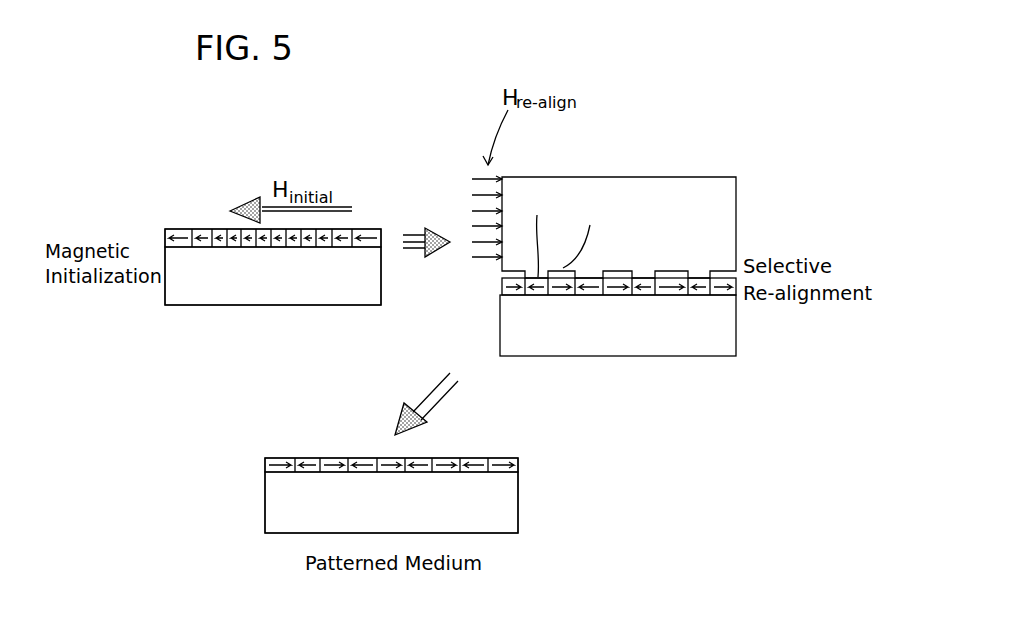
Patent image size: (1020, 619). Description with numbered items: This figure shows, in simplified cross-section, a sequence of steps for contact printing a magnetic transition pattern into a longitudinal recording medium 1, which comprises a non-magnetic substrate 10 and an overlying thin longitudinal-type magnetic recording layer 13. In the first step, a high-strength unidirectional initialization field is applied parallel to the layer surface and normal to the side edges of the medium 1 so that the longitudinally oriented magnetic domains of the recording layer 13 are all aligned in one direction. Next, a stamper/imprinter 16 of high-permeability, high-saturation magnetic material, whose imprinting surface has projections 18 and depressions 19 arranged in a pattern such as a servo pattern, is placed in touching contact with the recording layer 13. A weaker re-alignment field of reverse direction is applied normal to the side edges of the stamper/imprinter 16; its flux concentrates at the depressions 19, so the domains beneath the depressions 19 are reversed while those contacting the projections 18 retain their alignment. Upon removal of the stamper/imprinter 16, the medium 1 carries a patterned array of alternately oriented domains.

The longitudinal recording medium 1 is at (158, 293).
The non-magnetic substrate 10 is at (290, 289).
The magnetic recording layer 13 is at (367, 229).
The stamper/imprinter 16 is at (738, 207).
The projections 18 is at (537, 215).
The depressions 19 is at (590, 225).